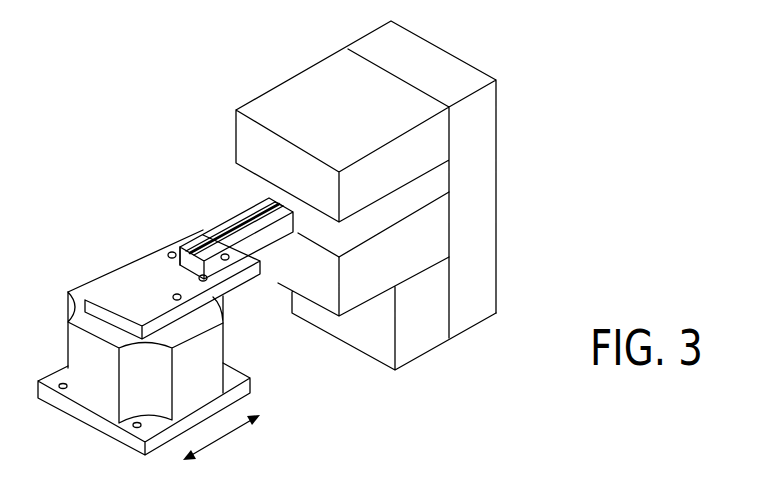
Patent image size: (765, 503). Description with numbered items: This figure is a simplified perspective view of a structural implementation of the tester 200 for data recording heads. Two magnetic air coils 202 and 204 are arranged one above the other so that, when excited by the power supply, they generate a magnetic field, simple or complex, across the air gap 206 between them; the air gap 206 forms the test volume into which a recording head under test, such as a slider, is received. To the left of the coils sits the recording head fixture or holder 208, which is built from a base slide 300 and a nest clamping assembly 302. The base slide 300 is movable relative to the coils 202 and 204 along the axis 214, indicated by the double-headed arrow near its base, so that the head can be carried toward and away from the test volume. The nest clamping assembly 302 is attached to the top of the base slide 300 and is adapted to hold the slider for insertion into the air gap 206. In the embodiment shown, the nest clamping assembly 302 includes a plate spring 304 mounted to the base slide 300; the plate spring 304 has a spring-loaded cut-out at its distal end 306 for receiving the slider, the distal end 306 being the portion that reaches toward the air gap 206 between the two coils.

The tester 200 is at (600, 105).
The magnetic air coil 202 is at (337, 65).
The magnetic air coil 204 is at (357, 290).
The air gap 206 is at (408, 197).
The recording head fixture 208 is at (166, 236).
The axis 214 is at (236, 426).
The base slide 300 is at (143, 298).
The nest clamping assembly 302 is at (237, 222).
The plate spring 304 is at (238, 248).
The distal end 306 is at (270, 198).